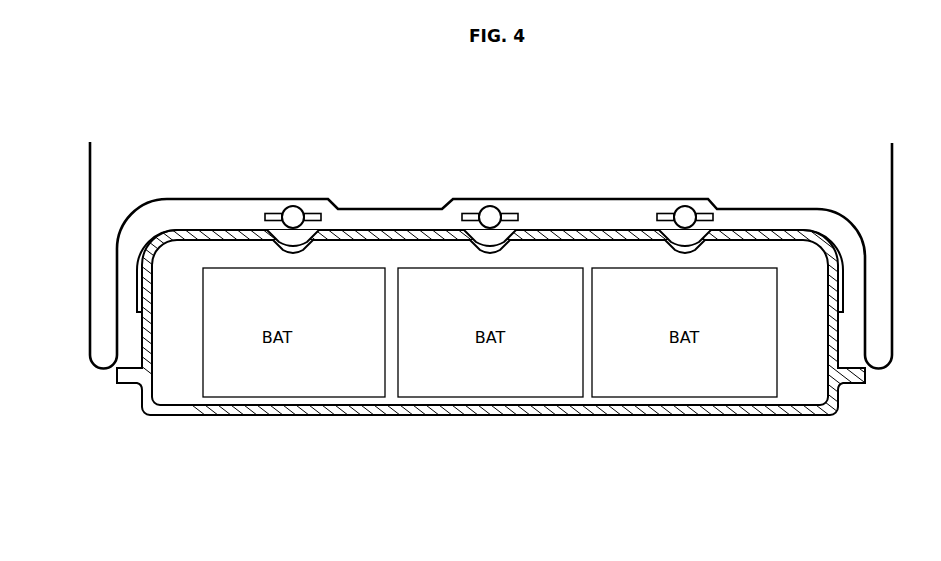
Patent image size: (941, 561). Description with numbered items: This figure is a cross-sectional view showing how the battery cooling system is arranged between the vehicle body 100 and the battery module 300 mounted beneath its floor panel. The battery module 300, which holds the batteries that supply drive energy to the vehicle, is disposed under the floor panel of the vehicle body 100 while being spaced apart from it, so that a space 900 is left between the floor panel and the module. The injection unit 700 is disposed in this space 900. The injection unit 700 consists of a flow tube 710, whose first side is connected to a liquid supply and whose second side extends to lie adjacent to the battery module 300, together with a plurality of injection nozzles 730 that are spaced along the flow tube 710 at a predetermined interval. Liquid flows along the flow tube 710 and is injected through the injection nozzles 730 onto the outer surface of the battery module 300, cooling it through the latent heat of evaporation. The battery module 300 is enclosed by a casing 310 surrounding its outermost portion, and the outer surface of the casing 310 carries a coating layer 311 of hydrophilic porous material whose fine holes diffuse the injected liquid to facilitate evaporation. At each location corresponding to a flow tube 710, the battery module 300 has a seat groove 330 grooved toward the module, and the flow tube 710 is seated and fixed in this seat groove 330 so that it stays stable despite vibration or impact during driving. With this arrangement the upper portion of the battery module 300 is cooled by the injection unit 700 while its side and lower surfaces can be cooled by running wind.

The vehicle body 100 is at (194, 199).
The battery module 300 is at (470, 331).
The casing 310 is at (201, 411).
The coating layer 311 is at (415, 230).
The seat groove 330 is at (310, 252).
The injection unit 700 is at (489, 172).
The flow tube 710 is at (296, 207).
The injection nozzle 730 is at (283, 148).
The space 900 is at (568, 217).